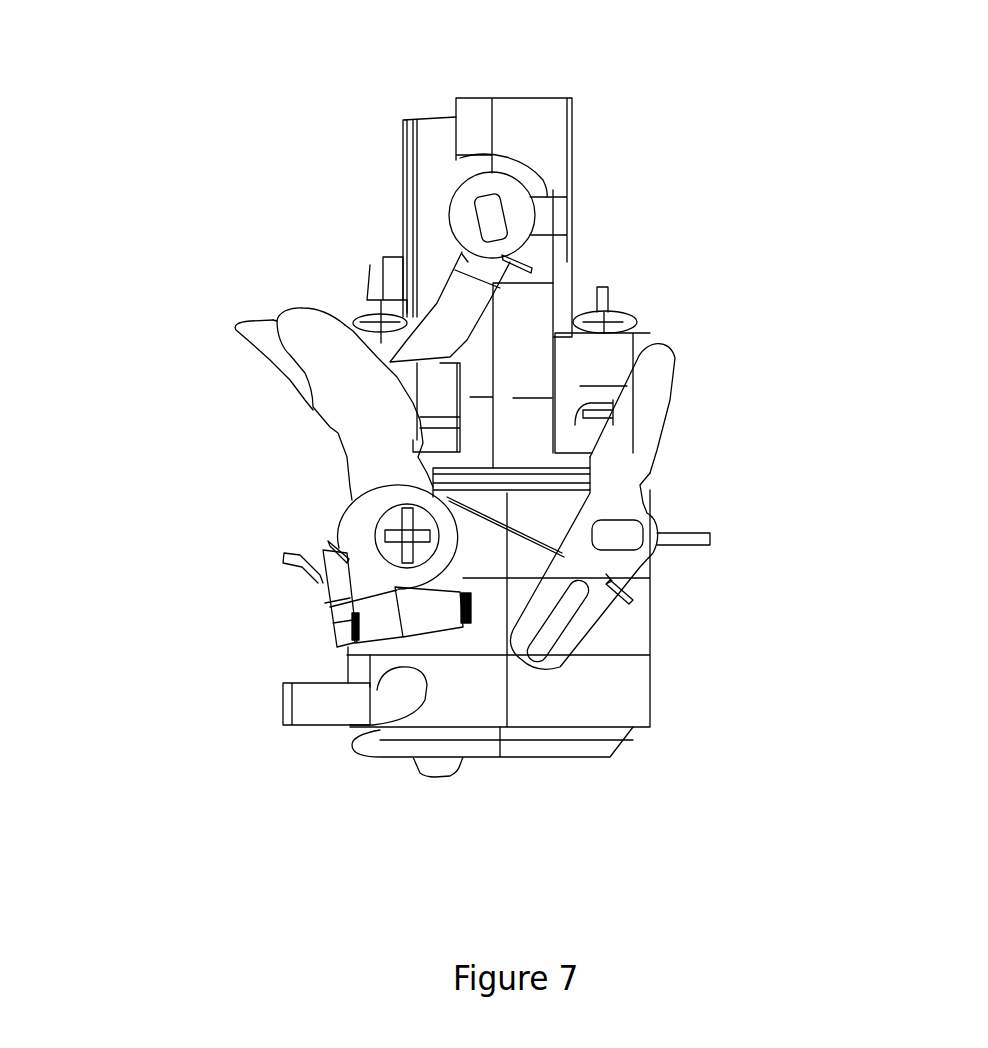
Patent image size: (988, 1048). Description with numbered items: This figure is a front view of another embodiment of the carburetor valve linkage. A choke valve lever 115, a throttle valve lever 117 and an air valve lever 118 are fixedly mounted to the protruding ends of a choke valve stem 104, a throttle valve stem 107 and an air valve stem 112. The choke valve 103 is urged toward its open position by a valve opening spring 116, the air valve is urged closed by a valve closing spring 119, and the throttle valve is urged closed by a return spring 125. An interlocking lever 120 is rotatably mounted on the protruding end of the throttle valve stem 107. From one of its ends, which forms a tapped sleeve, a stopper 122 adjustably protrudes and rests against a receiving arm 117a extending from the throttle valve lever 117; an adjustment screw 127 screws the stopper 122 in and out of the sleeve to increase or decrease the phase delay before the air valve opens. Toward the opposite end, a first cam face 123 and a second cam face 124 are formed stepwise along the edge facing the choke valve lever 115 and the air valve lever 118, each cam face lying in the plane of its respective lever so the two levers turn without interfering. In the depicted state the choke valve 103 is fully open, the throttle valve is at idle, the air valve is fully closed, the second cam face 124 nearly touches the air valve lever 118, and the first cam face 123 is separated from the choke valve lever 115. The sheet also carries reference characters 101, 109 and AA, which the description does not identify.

The valve body 101 is at (627, 693).
The choke valve 103 is at (710, 533).
The choke valve stem 104 is at (610, 530).
The throttle valve stem 107 is at (347, 552).
The housing block 109 is at (533, 118).
The air valve stem 112 is at (473, 192).
The choke valve lever 115 is at (645, 407).
The valve opening spring 116 is at (627, 585).
The throttle valve lever 117 is at (350, 505).
The receiving arm 117a is at (327, 620).
The air valve lever 118 is at (443, 312).
The valve closing spring 119 is at (520, 260).
The interlocking lever 120 is at (337, 408).
The stopper 122 is at (430, 623).
The first cam face 123 is at (338, 320).
The second cam face 124 is at (265, 318).
The return spring 125 is at (335, 546).
The adjustment screw 127 is at (375, 623).
The direction arrow AA is at (296, 284).